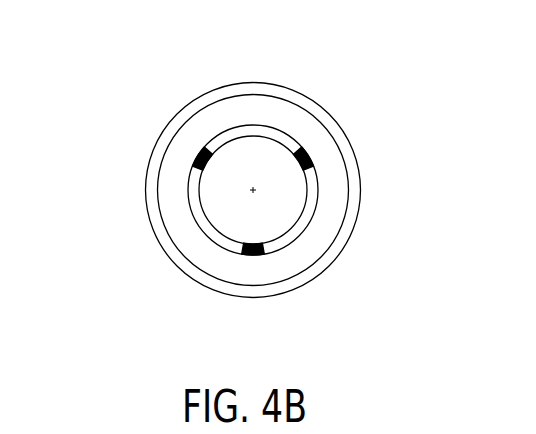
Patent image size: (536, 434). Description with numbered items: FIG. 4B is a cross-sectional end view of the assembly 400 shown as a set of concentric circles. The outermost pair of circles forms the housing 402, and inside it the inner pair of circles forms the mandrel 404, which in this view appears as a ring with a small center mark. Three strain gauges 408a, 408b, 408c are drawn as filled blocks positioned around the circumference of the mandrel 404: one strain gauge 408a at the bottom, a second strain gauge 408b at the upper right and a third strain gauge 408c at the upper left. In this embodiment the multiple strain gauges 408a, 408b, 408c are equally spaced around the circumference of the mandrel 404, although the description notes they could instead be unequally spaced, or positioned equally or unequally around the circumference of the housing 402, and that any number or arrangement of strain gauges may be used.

The electrode assembly 400 is at (137, 89).
The housing 402 is at (258, 82).
The mandrel 404 is at (191, 225).
The strain gauge 408a is at (254, 258).
The strain gauge 408b is at (314, 161).
The strain gauge 408c is at (191, 165).